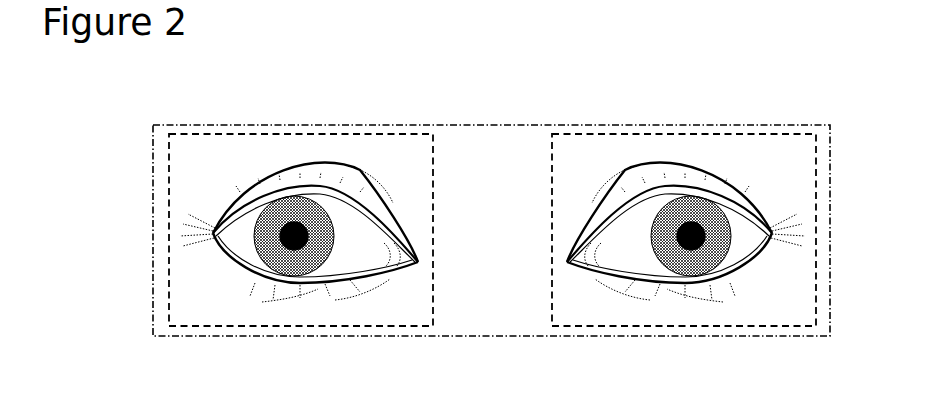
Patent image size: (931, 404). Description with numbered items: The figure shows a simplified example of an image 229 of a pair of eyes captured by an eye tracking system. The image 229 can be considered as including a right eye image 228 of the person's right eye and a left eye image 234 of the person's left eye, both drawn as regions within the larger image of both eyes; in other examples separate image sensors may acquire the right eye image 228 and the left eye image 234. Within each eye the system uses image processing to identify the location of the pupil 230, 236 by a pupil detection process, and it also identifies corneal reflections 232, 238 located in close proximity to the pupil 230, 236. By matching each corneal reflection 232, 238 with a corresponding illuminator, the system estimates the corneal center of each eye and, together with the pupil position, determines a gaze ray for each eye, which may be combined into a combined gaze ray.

The right eye image 228 is at (203, 132).
The image 229 is at (490, 123).
The pupil 230 is at (288, 210).
The corneal reflection 232 is at (308, 242).
The left eye image 234 is at (782, 132).
The pupil 236 is at (686, 186).
The corneal reflection 238 is at (646, 299).